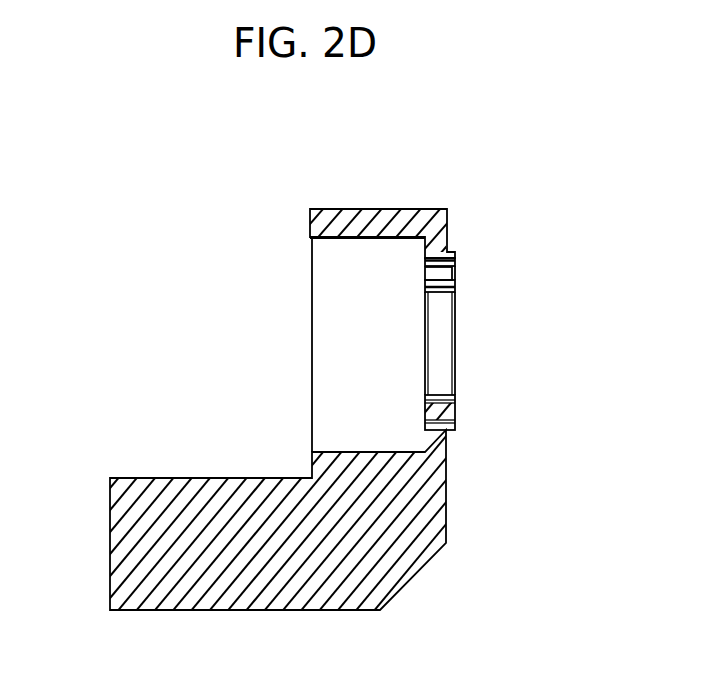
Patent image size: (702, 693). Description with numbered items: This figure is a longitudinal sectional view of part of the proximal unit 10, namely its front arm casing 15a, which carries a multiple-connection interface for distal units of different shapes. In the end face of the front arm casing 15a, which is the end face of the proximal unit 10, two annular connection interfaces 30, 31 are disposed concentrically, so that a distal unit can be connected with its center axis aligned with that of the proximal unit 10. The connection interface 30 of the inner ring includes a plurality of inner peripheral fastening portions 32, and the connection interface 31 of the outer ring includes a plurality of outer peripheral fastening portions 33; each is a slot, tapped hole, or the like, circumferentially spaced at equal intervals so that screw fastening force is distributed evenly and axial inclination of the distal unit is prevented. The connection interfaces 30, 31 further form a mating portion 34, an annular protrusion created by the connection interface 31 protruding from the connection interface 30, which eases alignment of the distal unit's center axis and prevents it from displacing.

The proximal unit 10 is at (495, 179).
The front arm casing 15a is at (348, 208).
The connection interface 30 is at (455, 290).
The connection interface 31 is at (453, 273).
The inner peripheral fastening portions 32 is at (425, 285).
The outer peripheral fastening portions 33 is at (425, 262).
The mating portion 34 is at (455, 413).